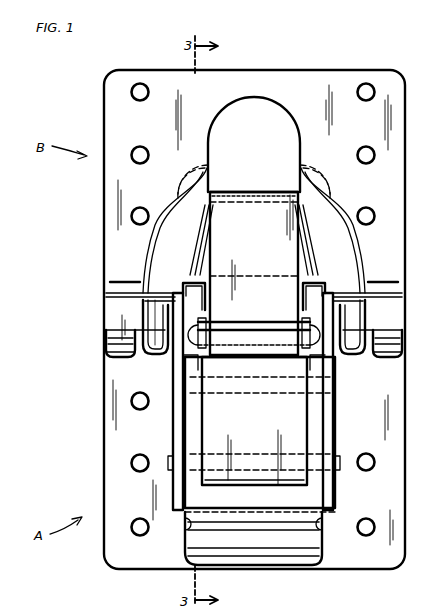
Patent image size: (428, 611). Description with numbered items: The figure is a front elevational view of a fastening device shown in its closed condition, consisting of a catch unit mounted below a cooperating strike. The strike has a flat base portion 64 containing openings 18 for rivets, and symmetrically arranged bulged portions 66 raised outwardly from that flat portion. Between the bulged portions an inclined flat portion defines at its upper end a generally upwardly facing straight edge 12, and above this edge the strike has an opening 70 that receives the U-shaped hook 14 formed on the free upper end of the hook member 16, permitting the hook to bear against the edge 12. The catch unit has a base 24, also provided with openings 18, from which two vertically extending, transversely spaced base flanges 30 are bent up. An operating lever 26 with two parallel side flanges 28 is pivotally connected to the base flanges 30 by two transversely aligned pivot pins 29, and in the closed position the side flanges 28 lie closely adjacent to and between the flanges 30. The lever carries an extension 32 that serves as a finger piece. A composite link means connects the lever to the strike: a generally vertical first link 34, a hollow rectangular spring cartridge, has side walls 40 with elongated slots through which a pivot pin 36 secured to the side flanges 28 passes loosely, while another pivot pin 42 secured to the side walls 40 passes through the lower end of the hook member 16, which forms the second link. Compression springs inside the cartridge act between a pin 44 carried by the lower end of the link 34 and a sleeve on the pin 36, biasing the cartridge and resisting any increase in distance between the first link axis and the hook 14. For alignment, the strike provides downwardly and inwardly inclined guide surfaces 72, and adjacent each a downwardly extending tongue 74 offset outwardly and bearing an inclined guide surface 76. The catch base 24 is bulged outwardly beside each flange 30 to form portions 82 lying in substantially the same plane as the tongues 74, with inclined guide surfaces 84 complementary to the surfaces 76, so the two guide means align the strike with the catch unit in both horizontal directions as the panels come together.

The straight edge 12 is at (300, 195).
The U-shaped hook 14 is at (230, 192).
The hook member 16 is at (252, 241).
The openings 18 is at (133, 216).
The base 24 is at (108, 444).
The operating lever 26 is at (315, 428).
The side flanges 28 is at (190, 290).
The pivot pins 29 is at (125, 329).
The base flanges 30 is at (178, 418).
The extension 32 is at (308, 563).
The first link 34 is at (256, 427).
The pivot pin 36 is at (312, 372).
The side walls 40 is at (295, 325).
The pivot pin 42 is at (316, 342).
The pin 44 is at (170, 458).
The flat base portion 64 is at (318, 75).
The bulged portions 66 is at (152, 262).
The opening 70 is at (255, 97).
The guide surfaces 72 is at (138, 296).
The tongue 74 is at (110, 320).
The guide surface 76 is at (112, 345).
The bulged portions 82 is at (166, 345).
The guide surfaces 84 is at (108, 352).